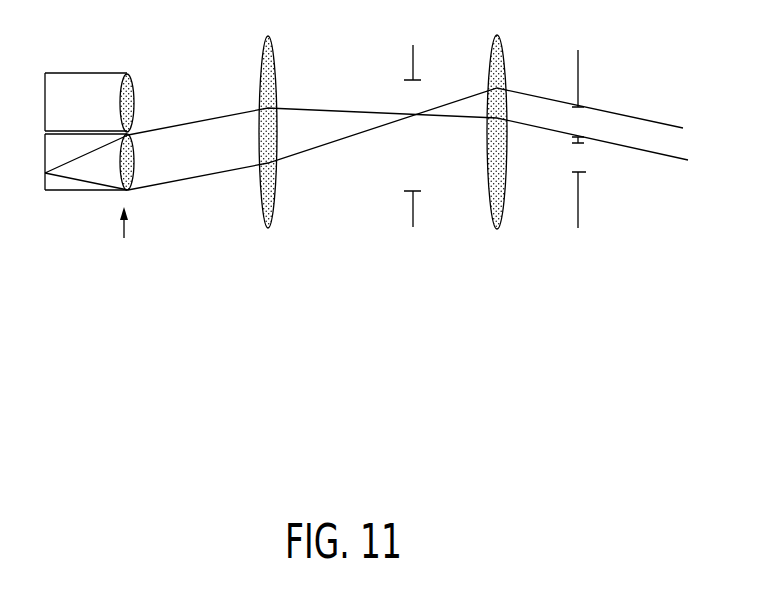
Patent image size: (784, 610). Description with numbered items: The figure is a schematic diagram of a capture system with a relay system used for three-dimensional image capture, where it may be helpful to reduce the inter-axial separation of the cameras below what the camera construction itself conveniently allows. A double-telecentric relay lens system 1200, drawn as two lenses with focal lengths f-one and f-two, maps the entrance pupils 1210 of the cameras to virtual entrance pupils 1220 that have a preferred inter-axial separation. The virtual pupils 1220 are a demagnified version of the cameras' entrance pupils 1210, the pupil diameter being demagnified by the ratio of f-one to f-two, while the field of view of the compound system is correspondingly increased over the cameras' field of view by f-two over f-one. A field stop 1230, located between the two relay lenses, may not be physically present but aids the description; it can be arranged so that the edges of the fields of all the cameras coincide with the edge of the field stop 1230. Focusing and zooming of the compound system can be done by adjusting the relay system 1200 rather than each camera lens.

The double-telecentric relay lens system 1200 is at (582, 396).
The entrance pupils of the cameras 1210 is at (125, 335).
The virtual entrance pupils 1220 is at (630, 317).
The field stop 1230 is at (405, 267).